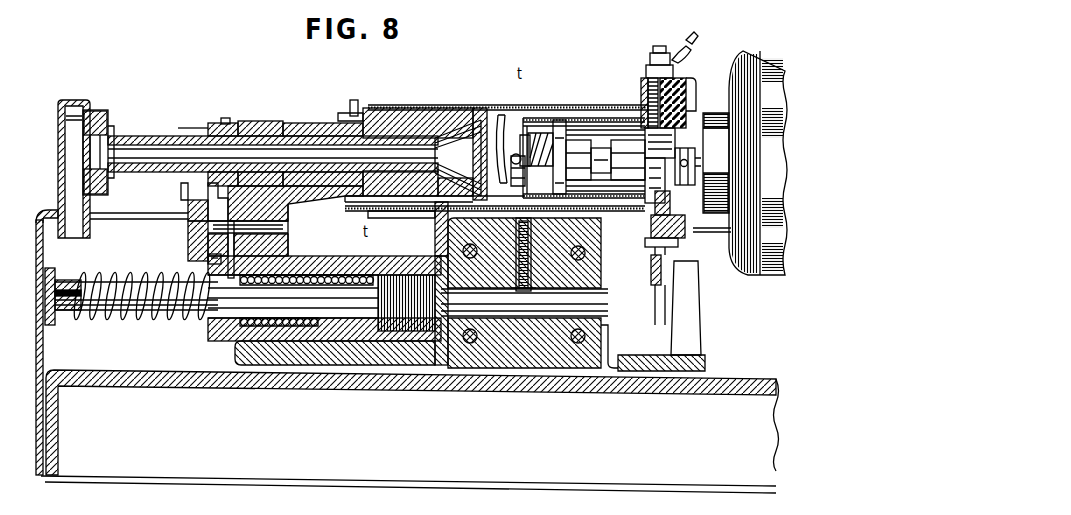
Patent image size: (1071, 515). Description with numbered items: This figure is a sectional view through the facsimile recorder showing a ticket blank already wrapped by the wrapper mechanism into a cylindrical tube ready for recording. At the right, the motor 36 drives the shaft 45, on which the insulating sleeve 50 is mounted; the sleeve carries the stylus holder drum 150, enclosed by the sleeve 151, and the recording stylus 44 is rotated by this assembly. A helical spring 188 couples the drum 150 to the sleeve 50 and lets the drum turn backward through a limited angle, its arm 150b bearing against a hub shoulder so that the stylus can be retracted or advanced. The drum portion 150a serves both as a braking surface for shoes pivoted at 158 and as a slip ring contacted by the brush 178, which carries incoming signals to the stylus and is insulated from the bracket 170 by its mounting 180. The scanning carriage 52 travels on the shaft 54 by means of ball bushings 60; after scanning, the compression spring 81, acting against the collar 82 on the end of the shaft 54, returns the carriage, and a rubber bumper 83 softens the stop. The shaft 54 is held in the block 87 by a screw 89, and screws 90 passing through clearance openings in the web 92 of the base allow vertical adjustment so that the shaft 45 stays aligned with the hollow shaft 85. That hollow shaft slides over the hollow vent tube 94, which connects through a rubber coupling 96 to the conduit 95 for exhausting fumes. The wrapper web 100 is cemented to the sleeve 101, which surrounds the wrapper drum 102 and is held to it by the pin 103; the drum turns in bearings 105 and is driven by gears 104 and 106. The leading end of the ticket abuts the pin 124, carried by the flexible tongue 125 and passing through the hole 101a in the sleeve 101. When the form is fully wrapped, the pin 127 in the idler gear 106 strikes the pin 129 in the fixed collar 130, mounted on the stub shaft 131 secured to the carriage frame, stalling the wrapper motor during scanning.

The motor 36 is at (740, 163).
The recording stylus 44 is at (498, 110).
The shaft 45 is at (690, 150).
The insulating sleeve 50 is at (598, 152).
The scanning carriage 52 is at (203, 112).
The shaft 54 is at (174, 300).
The ball bushings 60 is at (348, 318).
The compression spring 81 is at (98, 300).
The collar 82 is at (45, 310).
The rubber bumper 83 is at (450, 293).
The hollow shaft 85 is at (290, 128).
The block 87 is at (530, 352).
The screw 89 is at (521, 272).
The screws 90 is at (462, 336).
The web 92 is at (486, 376).
The hollow vent tube 94 is at (130, 128).
The conduit 95 is at (62, 92).
The rubber coupling 96 is at (94, 102).
The wrapper web 100 is at (466, 97).
The sleeve 101 is at (387, 100).
The hole 101a is at (440, 226).
The wrapper drum 102 is at (430, 100).
The pin 103 is at (347, 92).
The gear 104 is at (218, 110).
The bearings 105 is at (250, 113).
The idler gear 106 is at (223, 268).
The pin 124 is at (420, 212).
The flexible tongue 125 is at (428, 190).
The pin 127 is at (245, 300).
The pin 129 is at (200, 250).
The fixed collar 130 is at (181, 233).
The stub shaft 131 is at (184, 205).
The stylus holder drum 150 is at (575, 136).
The portion 150a is at (630, 178).
The arm 150b is at (510, 168).
The sleeve 151 is at (570, 117).
The pivot 158 is at (640, 235).
The bracket 170 is at (670, 330).
The brush 178 is at (638, 95).
The mounting 180 is at (672, 70).
The helical spring 188 is at (531, 135).